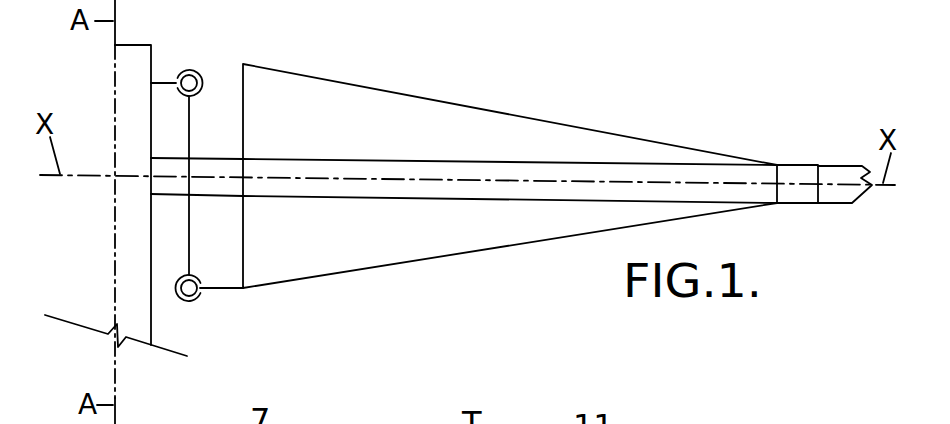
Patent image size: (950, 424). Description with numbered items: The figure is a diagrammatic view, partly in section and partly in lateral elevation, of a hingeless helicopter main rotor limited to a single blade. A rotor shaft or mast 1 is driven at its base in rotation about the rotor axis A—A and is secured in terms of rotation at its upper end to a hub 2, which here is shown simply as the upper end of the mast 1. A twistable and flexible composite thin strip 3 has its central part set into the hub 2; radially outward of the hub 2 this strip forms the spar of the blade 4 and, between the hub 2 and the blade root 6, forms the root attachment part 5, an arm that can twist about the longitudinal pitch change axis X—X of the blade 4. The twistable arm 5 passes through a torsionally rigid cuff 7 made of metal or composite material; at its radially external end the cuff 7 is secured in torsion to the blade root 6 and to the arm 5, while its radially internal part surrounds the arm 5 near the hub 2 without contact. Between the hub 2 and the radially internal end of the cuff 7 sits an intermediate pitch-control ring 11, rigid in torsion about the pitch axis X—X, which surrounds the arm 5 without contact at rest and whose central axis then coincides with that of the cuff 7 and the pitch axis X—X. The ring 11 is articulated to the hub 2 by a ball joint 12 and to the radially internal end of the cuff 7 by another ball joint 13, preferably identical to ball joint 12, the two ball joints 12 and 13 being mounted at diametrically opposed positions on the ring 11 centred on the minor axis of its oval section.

The rotor shaft or mast 1 is at (138, 322).
The hub 2 is at (125, 98).
The twistable and flexible composite thin strip 3 is at (163, 192).
The blade 4 is at (850, 160).
The root attachment part 5 is at (447, 173).
The blade root 6 is at (798, 173).
The torsionally rigid cuff 7 is at (397, 92).
The intermediate pitch-control ring 11 is at (189, 145).
The ball joint 12 is at (190, 80).
The ball joint 13 is at (196, 297).